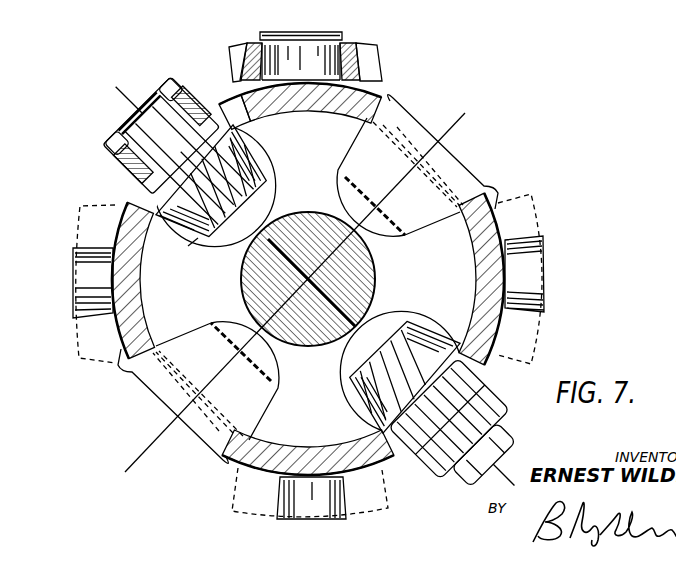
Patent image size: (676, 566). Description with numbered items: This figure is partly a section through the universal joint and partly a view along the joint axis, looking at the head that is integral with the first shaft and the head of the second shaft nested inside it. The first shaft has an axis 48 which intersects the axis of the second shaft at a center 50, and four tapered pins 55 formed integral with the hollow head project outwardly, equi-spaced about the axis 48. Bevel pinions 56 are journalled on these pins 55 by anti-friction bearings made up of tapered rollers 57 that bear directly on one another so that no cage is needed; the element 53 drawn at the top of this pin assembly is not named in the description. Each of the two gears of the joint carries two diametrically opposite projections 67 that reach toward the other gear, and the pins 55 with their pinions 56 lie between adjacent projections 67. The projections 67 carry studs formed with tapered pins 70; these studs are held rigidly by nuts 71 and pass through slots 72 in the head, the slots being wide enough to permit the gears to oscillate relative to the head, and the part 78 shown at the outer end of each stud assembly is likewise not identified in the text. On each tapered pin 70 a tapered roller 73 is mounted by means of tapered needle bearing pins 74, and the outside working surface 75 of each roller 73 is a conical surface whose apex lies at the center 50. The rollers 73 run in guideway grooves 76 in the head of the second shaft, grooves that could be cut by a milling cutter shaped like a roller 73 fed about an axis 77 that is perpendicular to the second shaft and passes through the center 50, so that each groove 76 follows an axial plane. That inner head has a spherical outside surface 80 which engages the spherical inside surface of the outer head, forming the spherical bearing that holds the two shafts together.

The axis 48 is at (308, 279).
The center 50 is at (336, 279).
The cylinder cap 53 is at (312, 33).
The pin 55 is at (330, 53).
The bevel pinion 56 is at (384, 64).
The tapered roller 57 is at (251, 48).
The projection 67 is at (130, 180).
The tapered pin 70 is at (223, 183).
The nut 71 is at (168, 90).
The slot 72 is at (227, 107).
The tapered roller 73 is at (245, 147).
The tapered needle bearing pin 74 is at (178, 207).
The outside working surface 75 is at (193, 246).
The guideway groove 76 is at (262, 152).
The axis 77 is at (150, 447).
The nut 78 is at (130, 104).
The spherical outside surface 80 is at (128, 371).